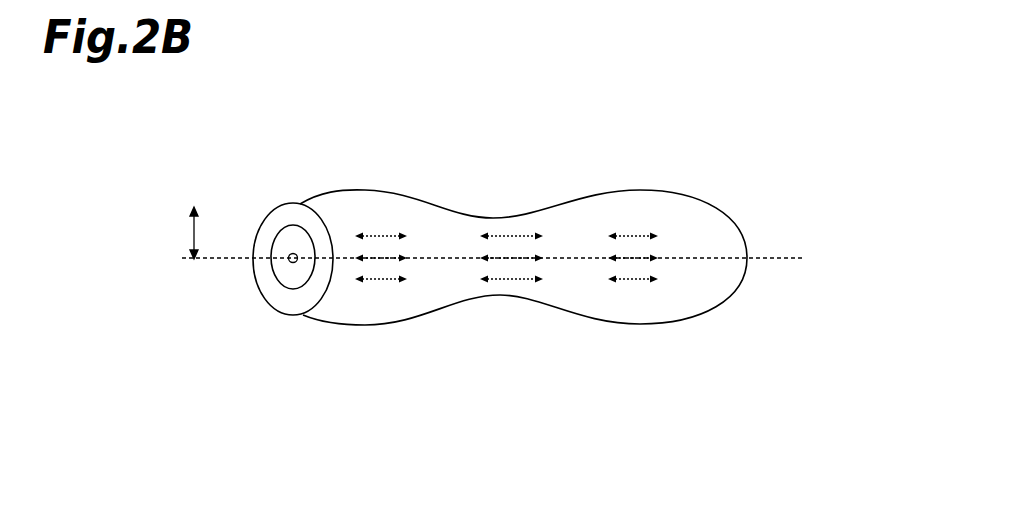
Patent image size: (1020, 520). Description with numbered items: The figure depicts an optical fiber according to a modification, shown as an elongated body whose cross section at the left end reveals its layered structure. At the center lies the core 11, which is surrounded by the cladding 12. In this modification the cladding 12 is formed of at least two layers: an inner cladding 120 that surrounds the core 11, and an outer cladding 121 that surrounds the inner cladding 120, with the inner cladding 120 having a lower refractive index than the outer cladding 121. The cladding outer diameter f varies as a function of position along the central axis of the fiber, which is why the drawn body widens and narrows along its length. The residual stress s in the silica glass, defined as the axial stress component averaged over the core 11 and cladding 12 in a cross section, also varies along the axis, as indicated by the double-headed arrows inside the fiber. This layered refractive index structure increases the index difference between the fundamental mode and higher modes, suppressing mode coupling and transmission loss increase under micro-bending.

The core 11 is at (287, 262).
The cladding 12 is at (233, 287).
The inner cladding 120 is at (293, 274).
The outer cladding 121 is at (287, 298).
The cladding outer diameter f is at (183, 233).
The residual stress s is at (506, 245).